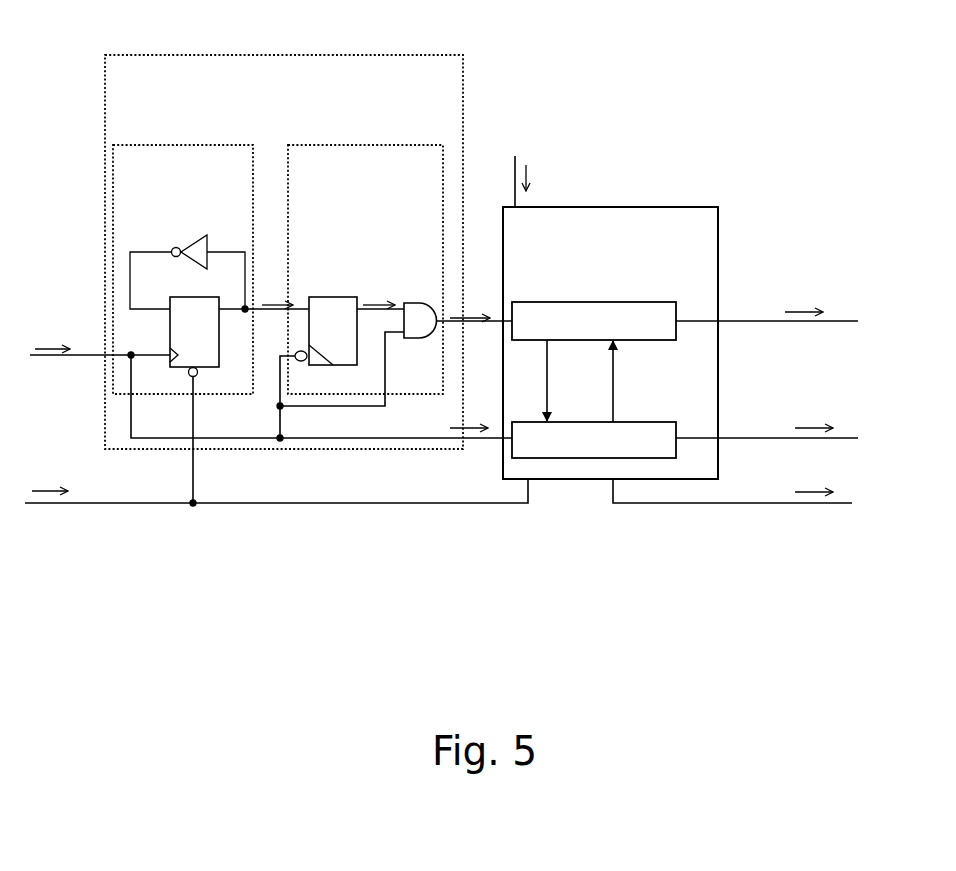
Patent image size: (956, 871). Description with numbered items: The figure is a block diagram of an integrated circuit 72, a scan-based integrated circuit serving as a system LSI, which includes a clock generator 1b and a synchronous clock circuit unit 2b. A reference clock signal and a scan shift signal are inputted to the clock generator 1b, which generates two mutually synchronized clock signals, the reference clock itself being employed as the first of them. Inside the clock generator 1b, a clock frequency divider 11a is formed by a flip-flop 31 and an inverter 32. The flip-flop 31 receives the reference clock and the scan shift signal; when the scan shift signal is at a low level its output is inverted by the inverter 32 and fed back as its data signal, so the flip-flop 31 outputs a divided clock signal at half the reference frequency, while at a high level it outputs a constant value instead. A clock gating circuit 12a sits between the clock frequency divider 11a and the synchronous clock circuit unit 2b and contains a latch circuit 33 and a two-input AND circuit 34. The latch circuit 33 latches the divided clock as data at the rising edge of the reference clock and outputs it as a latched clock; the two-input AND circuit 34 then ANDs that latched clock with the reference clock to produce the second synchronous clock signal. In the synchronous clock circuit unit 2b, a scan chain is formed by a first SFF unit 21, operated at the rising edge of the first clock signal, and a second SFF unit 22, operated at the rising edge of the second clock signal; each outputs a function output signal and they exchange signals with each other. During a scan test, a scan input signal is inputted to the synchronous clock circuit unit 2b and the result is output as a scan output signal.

The integrated circuit 72 is at (812, 151).
The clock generator 1b is at (397, 55).
The clock frequency divider 11a is at (113, 181).
The clock gating circuit 12a is at (443, 146).
The flip-flop 31 is at (204, 297).
The inverter 32 is at (208, 236).
The latch circuit 33 is at (321, 297).
The two-input AND circuit 34 is at (420, 303).
The synchronous clock circuit unit 2b is at (705, 207).
The first SFF unit 21 is at (664, 422).
The second SFF unit 22 is at (650, 302).